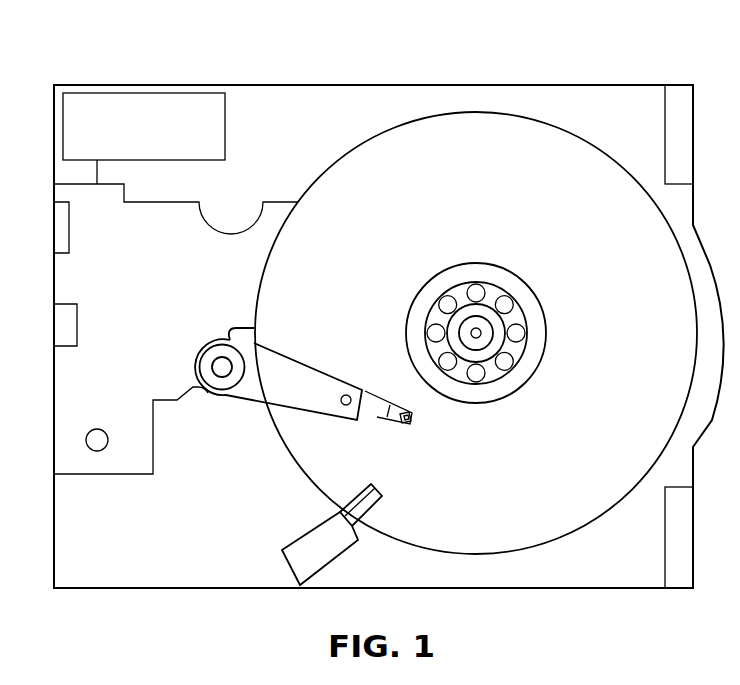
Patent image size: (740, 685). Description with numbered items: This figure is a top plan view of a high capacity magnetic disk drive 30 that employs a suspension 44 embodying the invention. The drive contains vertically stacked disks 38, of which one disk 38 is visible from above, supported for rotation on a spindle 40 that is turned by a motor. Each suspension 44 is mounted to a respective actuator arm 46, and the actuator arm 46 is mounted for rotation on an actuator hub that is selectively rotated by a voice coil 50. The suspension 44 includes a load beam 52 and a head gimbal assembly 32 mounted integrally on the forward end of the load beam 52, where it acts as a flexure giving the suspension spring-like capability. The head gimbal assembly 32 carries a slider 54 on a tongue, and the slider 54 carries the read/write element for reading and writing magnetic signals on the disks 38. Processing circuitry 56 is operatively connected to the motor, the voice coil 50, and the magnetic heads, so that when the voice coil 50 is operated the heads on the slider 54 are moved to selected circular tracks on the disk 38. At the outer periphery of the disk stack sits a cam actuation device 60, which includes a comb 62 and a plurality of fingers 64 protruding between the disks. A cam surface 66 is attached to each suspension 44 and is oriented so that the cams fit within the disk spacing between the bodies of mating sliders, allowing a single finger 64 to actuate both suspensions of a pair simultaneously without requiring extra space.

The magnetic disk drive 30 is at (508, 67).
The head gimbal assembly 32 is at (397, 403).
The disk 38 is at (611, 357).
The spindle 40 is at (478, 328).
The suspension 44 is at (338, 430).
The actuator arm 46 is at (293, 365).
The voice coil 50 is at (200, 213).
The load beam 52 is at (377, 418).
The slider 54 is at (404, 424).
The processing circuitry 56 is at (228, 107).
The cam actuation device 60 is at (319, 534).
The comb 62 is at (332, 567).
The finger 64 is at (382, 496).
The cam surface 66 is at (414, 420).